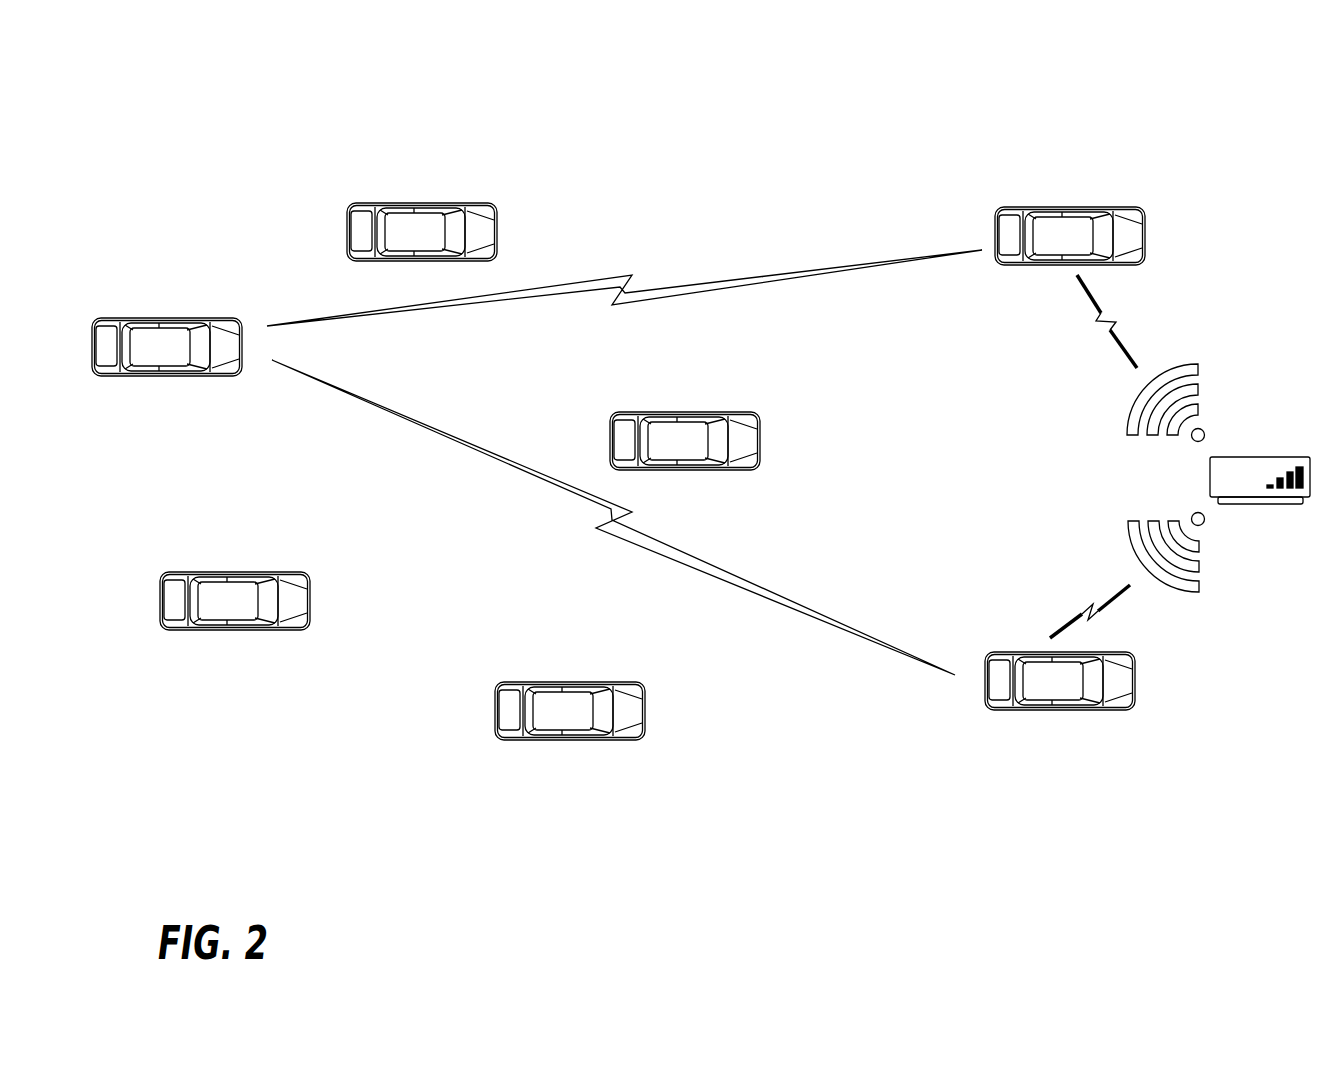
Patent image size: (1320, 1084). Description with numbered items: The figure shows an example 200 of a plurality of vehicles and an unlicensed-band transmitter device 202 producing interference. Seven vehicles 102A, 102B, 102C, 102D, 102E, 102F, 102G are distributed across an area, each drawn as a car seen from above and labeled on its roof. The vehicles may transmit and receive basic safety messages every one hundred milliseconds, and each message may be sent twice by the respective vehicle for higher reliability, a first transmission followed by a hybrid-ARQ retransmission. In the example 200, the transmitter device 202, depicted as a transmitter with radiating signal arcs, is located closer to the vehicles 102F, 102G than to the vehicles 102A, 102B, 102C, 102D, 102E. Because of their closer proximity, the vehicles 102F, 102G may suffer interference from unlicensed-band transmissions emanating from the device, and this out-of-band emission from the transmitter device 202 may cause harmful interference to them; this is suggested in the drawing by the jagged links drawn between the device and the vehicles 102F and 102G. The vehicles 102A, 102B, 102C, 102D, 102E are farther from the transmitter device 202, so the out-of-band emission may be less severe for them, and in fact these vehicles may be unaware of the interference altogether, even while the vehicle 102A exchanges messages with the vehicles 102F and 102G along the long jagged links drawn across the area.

The example 200 is at (240, 73).
The vehicle 102A is at (167, 347).
The vehicle 102B is at (422, 232).
The vehicle 102C is at (685, 441).
The vehicle 102D is at (570, 711).
The vehicle 102E is at (235, 601).
The vehicle 102F is at (1070, 236).
The vehicle 102G is at (1060, 681).
The U-NII-4 device 202 is at (1244, 579).